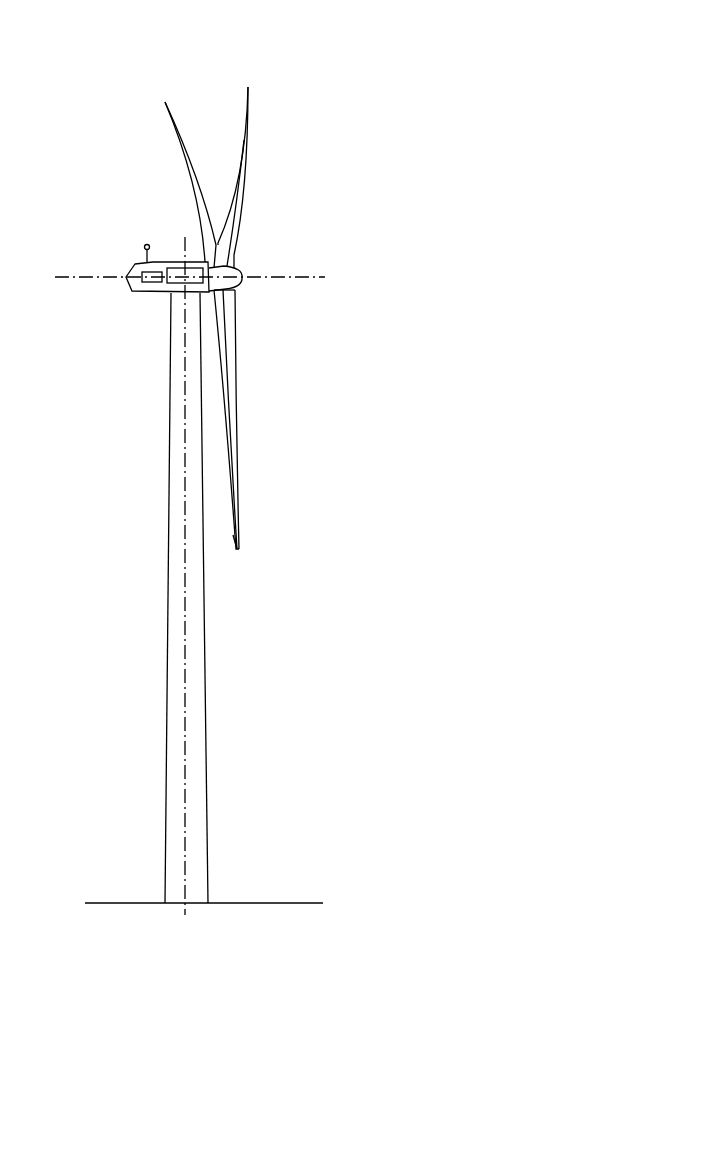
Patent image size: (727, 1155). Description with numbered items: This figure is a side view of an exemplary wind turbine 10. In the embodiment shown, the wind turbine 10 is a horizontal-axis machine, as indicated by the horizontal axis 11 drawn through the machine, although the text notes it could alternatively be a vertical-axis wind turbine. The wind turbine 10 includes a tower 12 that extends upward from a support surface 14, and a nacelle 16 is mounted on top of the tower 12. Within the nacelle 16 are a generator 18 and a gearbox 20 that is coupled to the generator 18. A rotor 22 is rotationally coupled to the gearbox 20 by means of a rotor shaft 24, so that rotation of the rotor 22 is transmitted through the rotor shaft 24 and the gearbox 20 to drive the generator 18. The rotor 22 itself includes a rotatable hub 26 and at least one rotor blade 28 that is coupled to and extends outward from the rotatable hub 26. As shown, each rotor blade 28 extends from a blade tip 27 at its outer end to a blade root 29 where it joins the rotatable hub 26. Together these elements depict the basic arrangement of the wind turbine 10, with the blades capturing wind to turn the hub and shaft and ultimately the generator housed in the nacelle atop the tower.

The wind turbine 10 is at (345, 59).
The horizontal axis 11 is at (303, 279).
The tower 12 is at (165, 687).
The support surface 14 is at (125, 902).
The nacelle 16 is at (142, 293).
The generator 18 is at (143, 267).
The gearbox 20 is at (175, 262).
The rotor 22 is at (257, 253).
The rotor shaft 24 is at (208, 296).
The rotatable hub 26 is at (242, 281).
The blade tip 27 is at (239, 550).
The rotor blade 28 is at (182, 142).
The blade root 29 is at (238, 304).